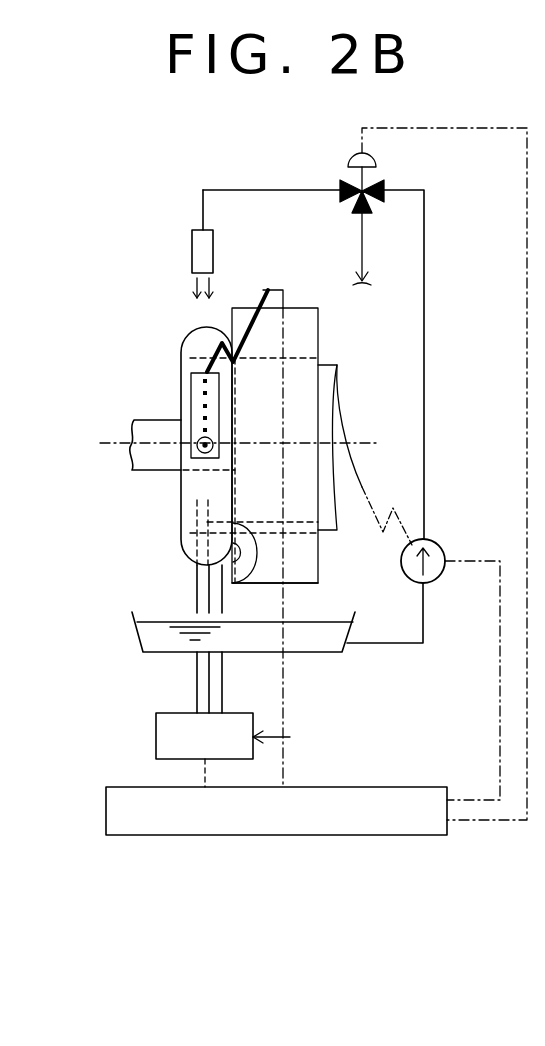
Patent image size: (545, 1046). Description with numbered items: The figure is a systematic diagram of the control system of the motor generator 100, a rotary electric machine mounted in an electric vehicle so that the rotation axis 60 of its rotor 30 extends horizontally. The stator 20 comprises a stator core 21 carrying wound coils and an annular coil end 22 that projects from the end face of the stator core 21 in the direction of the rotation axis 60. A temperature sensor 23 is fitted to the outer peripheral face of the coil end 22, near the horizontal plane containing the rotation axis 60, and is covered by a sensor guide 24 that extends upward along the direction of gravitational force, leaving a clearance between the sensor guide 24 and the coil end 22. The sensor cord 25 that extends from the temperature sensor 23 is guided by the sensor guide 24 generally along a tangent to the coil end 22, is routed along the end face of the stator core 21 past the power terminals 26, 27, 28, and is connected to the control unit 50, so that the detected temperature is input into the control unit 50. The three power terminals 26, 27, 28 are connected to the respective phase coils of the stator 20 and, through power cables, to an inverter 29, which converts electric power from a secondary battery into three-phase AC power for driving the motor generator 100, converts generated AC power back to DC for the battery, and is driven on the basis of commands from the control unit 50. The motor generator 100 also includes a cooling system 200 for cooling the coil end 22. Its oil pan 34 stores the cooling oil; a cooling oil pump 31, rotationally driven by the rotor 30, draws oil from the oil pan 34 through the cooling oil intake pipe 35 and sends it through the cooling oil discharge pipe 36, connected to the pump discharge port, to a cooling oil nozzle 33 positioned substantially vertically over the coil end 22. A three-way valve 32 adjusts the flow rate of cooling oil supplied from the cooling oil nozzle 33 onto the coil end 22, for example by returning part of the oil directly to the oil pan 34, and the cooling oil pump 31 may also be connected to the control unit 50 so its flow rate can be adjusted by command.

The motor generator 100 is at (172, 192).
The stator 20 is at (314, 587).
The stator core 21 is at (318, 333).
The coil end 22 is at (181, 535).
The temperature sensor 23 is at (203, 453).
The sensor guide 24 is at (191, 380).
The sensor cord 25 is at (262, 292).
The power terminal 26 is at (197, 580).
The power terminal 27 is at (200, 598).
The power terminal 28 is at (230, 513).
The inverter 29 is at (156, 723).
The rotor 30 is at (153, 418).
The cooling oil pump 31 is at (438, 585).
The three-way valve 32 is at (376, 160).
The cooling oil nozzle 33 is at (213, 243).
The oil pan 34 is at (153, 652).
The cooling oil intake pipe 35 is at (378, 645).
The cooling oil discharge pipe 36 is at (424, 298).
The control unit 50 is at (400, 837).
The rotation axis 60 is at (363, 443).
The cooling system 200 is at (348, 680).